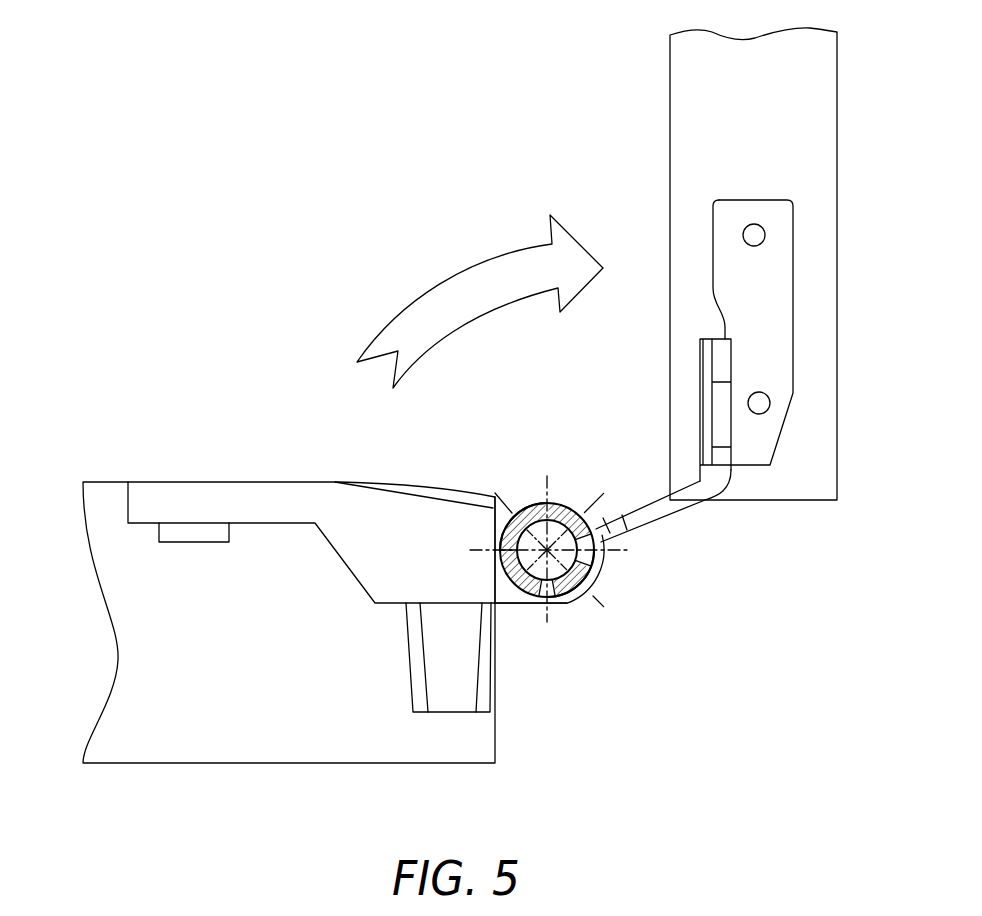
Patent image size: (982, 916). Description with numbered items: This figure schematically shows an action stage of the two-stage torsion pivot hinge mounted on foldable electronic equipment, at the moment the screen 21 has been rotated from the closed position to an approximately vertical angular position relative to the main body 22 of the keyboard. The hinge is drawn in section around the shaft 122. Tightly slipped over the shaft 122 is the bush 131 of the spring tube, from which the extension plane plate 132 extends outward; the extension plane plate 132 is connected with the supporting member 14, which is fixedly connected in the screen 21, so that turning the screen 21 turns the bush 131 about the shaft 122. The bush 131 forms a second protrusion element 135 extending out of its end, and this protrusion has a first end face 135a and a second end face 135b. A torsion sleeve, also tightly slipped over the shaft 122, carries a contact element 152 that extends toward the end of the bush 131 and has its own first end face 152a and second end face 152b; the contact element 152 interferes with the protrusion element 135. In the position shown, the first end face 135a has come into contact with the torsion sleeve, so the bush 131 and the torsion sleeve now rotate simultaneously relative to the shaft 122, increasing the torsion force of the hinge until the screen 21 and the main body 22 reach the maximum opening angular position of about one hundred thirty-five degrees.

The supporting member 14 is at (713, 362).
The screen 21 is at (703, 100).
The main body of a keyboard 22 is at (152, 743).
The shaft 122 is at (568, 555).
The bush 131 is at (522, 605).
The extension plane plate 132 is at (657, 507).
The second protrusion element 135 is at (510, 585).
The first end face 135a is at (500, 530).
The second end face 135b is at (566, 592).
The contact element 152 is at (555, 515).
The first end face 152a is at (498, 563).
The second end face 152b is at (577, 560).